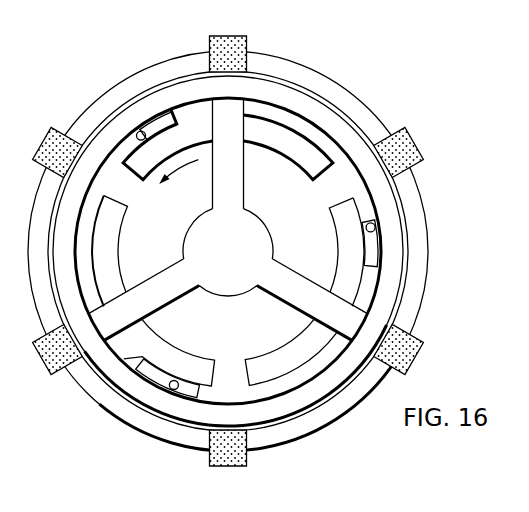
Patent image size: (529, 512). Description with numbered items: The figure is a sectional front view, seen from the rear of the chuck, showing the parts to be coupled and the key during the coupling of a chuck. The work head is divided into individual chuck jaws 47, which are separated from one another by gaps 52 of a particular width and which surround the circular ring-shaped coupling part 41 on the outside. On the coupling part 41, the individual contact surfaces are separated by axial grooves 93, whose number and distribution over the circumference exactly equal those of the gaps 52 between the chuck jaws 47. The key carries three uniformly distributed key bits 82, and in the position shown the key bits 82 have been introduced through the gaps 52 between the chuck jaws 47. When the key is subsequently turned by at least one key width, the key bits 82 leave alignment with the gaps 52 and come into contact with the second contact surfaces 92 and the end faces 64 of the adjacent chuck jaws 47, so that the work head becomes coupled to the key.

The coupling part 41 is at (114, 396).
The chuck jaws 47 is at (167, 433).
The gaps 52 is at (250, 112).
The end face 64 is at (157, 115).
The second contact surfaces 92 is at (202, 229).
The key bits 82 is at (218, 117).
The axial grooves 93 is at (166, 135).